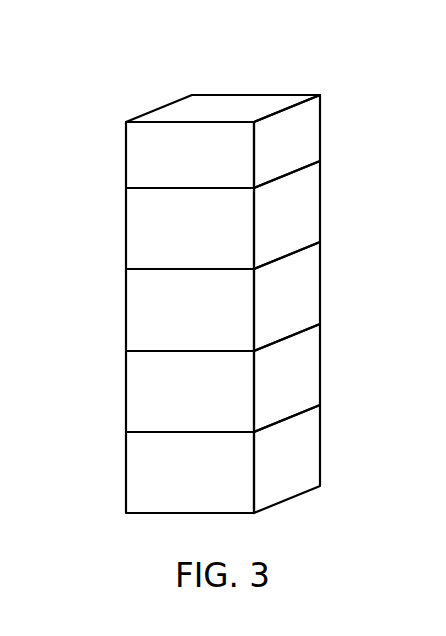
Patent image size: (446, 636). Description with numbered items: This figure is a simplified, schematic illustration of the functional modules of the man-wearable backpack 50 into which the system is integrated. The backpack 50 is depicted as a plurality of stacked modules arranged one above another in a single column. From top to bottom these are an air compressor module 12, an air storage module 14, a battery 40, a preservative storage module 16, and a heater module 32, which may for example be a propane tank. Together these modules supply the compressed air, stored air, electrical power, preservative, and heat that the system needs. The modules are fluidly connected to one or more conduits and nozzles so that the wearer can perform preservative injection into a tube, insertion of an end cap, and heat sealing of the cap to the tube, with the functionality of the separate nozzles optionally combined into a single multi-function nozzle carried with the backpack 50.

The backpack 50 is at (104, 47).
The air compressor module 12 is at (293, 138).
The air storage module 14 is at (293, 220).
The battery 40 is at (293, 301).
The preservative storage module 16 is at (293, 382).
The heater module 32 is at (293, 465).